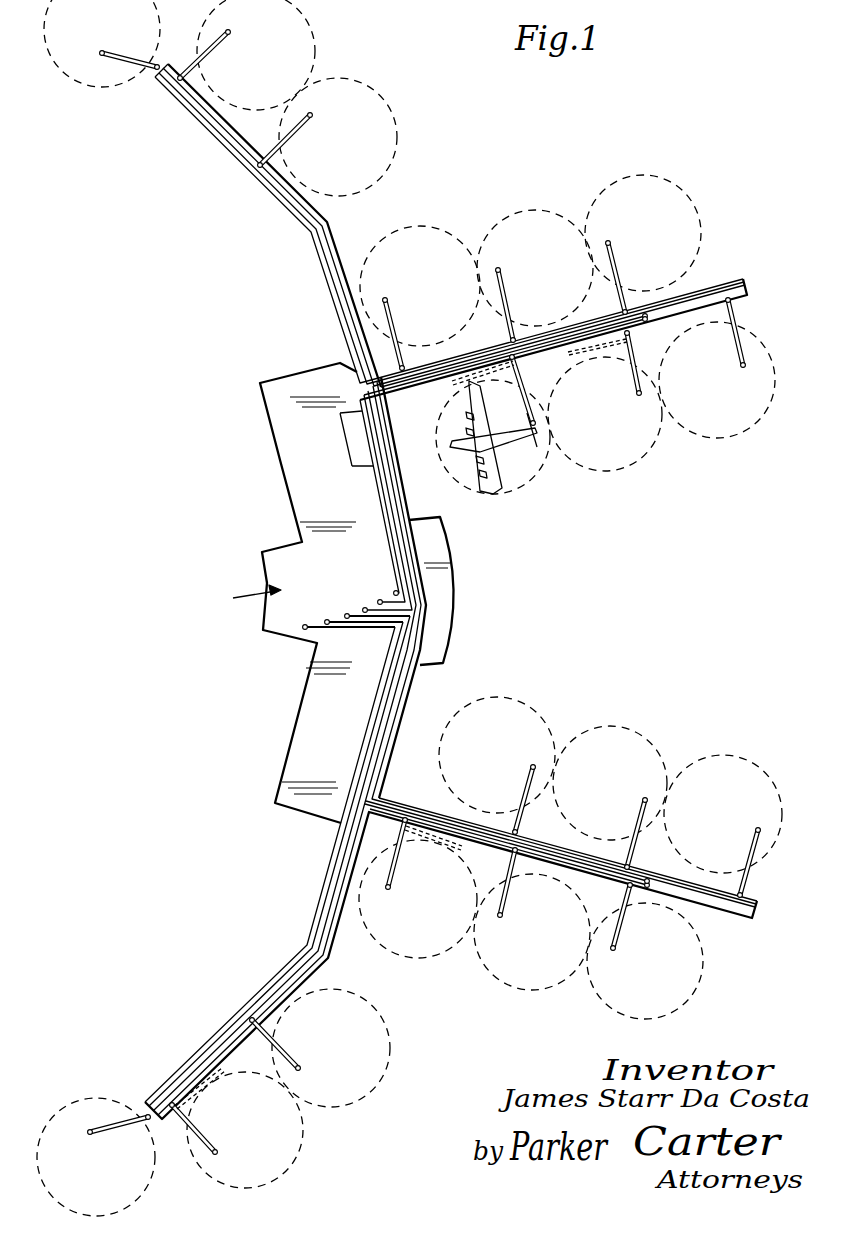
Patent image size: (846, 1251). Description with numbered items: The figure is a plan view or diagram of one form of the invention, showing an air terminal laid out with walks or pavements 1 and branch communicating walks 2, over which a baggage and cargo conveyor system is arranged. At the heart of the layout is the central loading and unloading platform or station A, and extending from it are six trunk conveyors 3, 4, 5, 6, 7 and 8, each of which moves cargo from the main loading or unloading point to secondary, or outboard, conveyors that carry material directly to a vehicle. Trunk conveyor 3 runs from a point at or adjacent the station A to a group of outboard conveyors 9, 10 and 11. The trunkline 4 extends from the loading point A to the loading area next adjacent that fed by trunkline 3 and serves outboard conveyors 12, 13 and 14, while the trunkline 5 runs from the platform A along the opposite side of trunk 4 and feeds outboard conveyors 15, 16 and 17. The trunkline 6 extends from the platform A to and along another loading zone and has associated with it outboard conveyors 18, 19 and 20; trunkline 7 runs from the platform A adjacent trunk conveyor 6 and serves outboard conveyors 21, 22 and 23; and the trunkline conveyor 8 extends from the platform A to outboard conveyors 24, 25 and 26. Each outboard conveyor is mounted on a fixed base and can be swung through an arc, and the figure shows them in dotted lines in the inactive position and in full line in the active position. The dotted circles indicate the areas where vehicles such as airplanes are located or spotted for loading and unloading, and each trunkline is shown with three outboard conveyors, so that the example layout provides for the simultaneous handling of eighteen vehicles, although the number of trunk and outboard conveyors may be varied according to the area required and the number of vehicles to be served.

The walks or pavements 1 is at (298, 690).
The branch communicating walks 2 is at (258, 184).
The trunk conveyor 3 is at (322, 625).
The trunkline 4 is at (338, 620).
The trunkline 5 is at (354, 614).
The trunkline 6 is at (377, 608).
The trunkline 7 is at (392, 600).
The trunkline conveyor 8 is at (400, 590).
The outboard conveyor 9 is at (108, 1125).
The outboard conveyor 10 is at (224, 1067).
The outboard conveyor 11 is at (288, 1055).
The outboard conveyor 12 is at (392, 878).
The outboard conveyor 13 is at (505, 903).
The outboard conveyor 14 is at (618, 940).
The outboard conveyor 15 is at (528, 775).
The outboard conveyor 16 is at (640, 812).
The outboard conveyor 17 is at (753, 840).
The outboard conveyor 18 is at (455, 385).
The outboard conveyor 19 is at (631, 352).
The outboard conveyor 20 is at (738, 335).
The outboard conveyor 21 is at (392, 318).
The outboard conveyor 22 is at (502, 270).
The outboard conveyor 23 is at (613, 250).
The outboard conveyor 24 is at (296, 130).
The outboard conveyor 25 is at (225, 38).
The outboard conveyor 26 is at (124, 57).
The central loading and unloading platform or station A is at (244, 598).